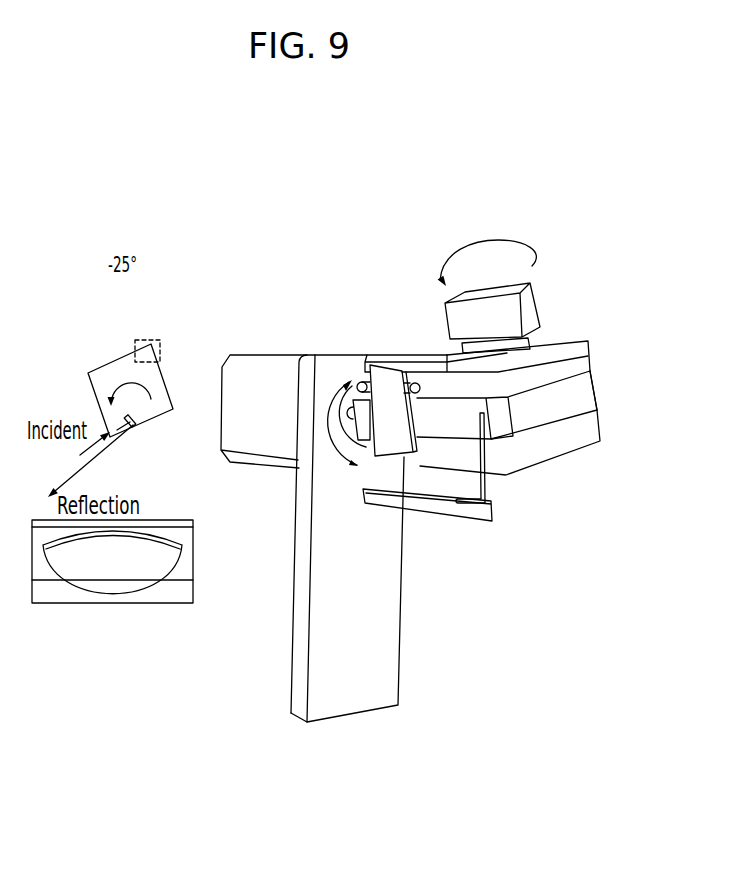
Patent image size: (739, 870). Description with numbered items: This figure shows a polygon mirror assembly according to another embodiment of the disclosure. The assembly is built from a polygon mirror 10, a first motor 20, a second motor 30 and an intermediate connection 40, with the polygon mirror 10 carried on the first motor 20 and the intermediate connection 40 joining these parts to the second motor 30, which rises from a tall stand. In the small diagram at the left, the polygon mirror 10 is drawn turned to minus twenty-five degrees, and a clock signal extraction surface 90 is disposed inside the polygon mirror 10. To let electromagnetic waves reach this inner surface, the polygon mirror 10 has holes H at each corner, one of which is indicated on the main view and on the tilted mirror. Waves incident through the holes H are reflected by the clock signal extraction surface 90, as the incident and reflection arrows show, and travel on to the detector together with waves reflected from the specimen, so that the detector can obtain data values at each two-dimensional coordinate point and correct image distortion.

The polygon mirror 10 is at (548, 452).
The first motor 20 is at (534, 301).
The second motor 30 is at (262, 373).
The intermediate connection 40 is at (395, 353).
The clock signal extraction surface 90 is at (141, 434).
The holes H is at (135, 340).